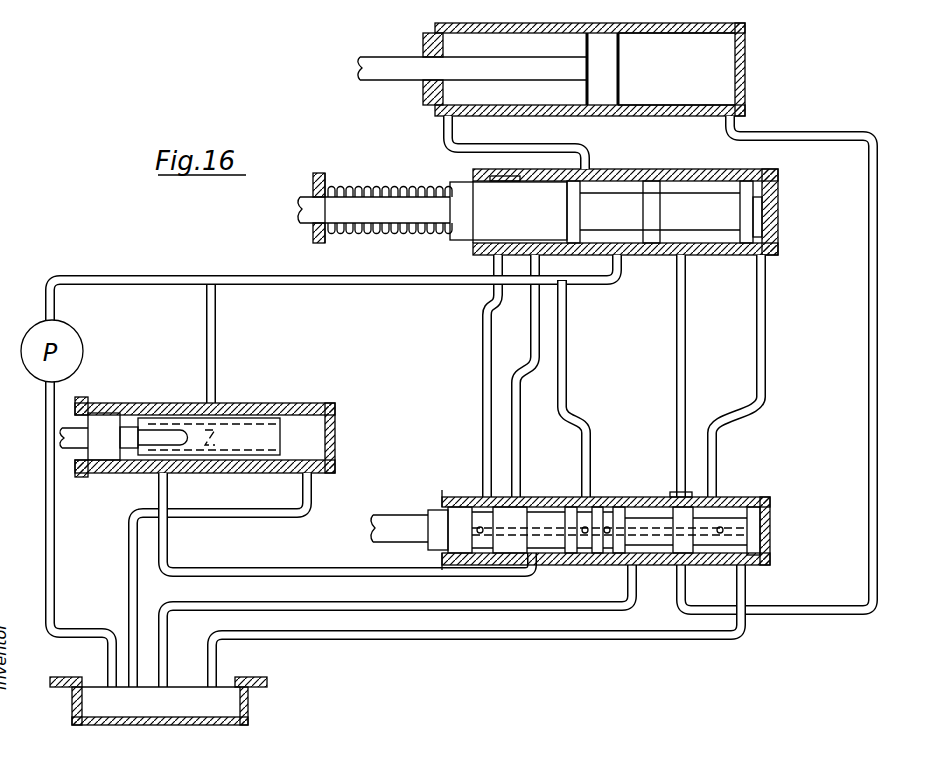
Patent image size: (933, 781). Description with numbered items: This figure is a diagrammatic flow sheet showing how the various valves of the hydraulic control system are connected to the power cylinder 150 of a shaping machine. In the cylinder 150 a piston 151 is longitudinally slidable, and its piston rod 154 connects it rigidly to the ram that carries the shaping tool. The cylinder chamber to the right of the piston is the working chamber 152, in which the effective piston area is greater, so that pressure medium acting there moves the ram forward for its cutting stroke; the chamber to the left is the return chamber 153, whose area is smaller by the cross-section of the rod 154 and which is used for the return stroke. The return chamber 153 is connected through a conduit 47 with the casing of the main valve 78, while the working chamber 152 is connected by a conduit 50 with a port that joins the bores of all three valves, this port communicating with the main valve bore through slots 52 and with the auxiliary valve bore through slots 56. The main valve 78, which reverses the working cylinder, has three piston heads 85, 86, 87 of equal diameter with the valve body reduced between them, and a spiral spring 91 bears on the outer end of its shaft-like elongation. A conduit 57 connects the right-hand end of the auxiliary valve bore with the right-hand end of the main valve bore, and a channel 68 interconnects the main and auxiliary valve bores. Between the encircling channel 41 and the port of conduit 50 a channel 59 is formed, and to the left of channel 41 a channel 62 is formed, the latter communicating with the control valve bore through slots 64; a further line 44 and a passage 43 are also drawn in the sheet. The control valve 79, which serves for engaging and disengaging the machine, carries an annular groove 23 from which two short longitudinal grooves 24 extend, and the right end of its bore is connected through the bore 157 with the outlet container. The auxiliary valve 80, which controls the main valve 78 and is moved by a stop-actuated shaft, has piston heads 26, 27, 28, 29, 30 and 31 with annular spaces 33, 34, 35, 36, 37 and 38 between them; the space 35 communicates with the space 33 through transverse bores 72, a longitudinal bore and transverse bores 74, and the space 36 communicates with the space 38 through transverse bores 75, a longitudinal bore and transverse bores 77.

The power cylinder 150 is at (745, 40).
The piston 151 is at (619, 89).
The right or working chamber 152 is at (718, 94).
The left or return chamber 153 is at (455, 43).
The piston rod 154 is at (556, 70).
The conduit 47 is at (506, 150).
The conduit 50 is at (878, 361).
The spiral spring 91 is at (364, 188).
The main valve 78 is at (466, 185).
The piston head 85 is at (576, 205).
The piston head 86 is at (652, 212).
The piston head 87 is at (748, 208).
The encircling channel 41 is at (618, 268).
The channel 68 is at (492, 352).
The slots 64 is at (532, 345).
The conduit 44 is at (590, 446).
The slots 52 is at (683, 356).
The conduit 57 is at (762, 356).
The annular groove 23 is at (130, 420).
The longitudinal grooves 24 is at (160, 433).
The passage 43 is at (215, 452).
The control valve 79 is at (109, 475).
The bore 157 is at (288, 520).
The channel 62 is at (203, 570).
The channel 59 is at (494, 638).
The auxiliary valve 80 is at (432, 515).
The transverse bores 74 is at (440, 548).
The piston head 26 is at (456, 515).
The piston head 27 is at (510, 548).
The piston head 28 is at (571, 555).
The piston head 29 is at (597, 555).
The piston head 30 is at (619, 555).
The slots 56 is at (680, 497).
The annular space 33 is at (484, 549).
The annular space 34 is at (549, 550).
The annular space 35 is at (582, 556).
The annular space 36 is at (607, 556).
The annular space 37 is at (650, 520).
The annular space 38 is at (736, 515).
The piston head 31 is at (686, 543).
The transverse bores 72 is at (583, 527).
The transverse bores 75 is at (606, 527).
The transverse bores 77 is at (721, 536).